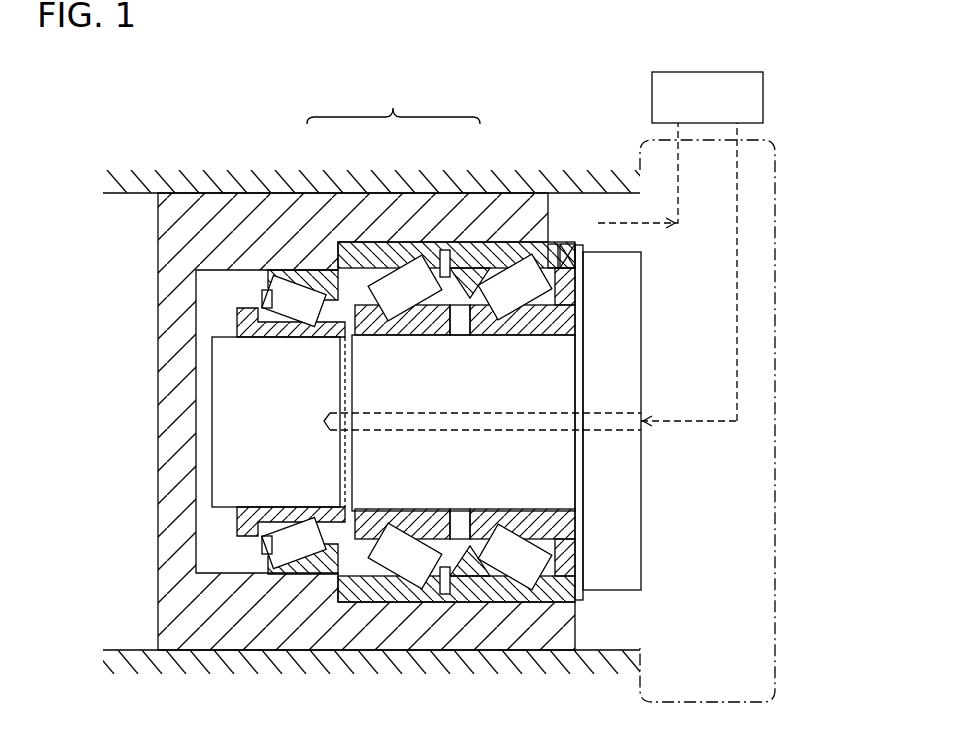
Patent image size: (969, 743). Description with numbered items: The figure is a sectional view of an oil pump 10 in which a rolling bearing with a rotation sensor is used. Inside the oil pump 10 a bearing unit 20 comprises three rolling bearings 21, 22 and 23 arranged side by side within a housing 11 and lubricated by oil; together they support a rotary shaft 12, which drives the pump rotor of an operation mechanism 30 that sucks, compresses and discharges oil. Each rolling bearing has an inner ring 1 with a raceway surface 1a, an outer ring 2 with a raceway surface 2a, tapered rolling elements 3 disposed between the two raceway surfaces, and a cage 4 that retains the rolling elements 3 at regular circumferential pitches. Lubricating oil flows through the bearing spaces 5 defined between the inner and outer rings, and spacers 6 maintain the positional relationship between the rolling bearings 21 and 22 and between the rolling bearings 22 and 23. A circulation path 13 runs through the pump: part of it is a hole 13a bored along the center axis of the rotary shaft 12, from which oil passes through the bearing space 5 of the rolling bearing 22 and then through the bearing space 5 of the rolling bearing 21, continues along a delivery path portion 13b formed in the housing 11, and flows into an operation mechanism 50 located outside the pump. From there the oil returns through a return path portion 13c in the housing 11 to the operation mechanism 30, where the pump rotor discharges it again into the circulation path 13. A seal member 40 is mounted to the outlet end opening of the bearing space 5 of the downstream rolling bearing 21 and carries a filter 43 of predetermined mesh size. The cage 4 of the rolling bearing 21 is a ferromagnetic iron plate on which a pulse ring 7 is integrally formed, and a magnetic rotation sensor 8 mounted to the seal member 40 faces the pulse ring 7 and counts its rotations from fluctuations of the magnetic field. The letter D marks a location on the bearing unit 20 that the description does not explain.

The inner ring 1 is at (248, 542).
The raceway surface 1a is at (388, 312).
The outer ring 2 is at (292, 574).
The raceway surface 2a is at (440, 312).
The rolling elements 3 is at (278, 316).
The cage 4 is at (335, 315).
The bearing space 5 is at (472, 310).
The spacers 6 is at (360, 517).
The pulse ring 7 is at (586, 260).
The magnetic rotation sensor 8 is at (553, 243).
The oil pump 10 is at (262, 150).
The housing 11 is at (152, 190).
The rotary shaft 12 is at (238, 452).
The circulation path 13 is at (672, 436).
The hole 13a is at (612, 413).
The delivery path portion 13b is at (678, 188).
The return path portion 13c is at (737, 267).
The bearing unit 20 is at (393, 97).
The rolling bearing 21 is at (497, 242).
The rolling bearing 22 is at (393, 240).
The rolling bearing 23 is at (312, 268).
The operation mechanism 30 is at (742, 521).
The seal member 40 is at (580, 244).
The filter 43 is at (585, 582).
The operation mechanism 50 is at (765, 101).
The diameter D is at (515, 245).